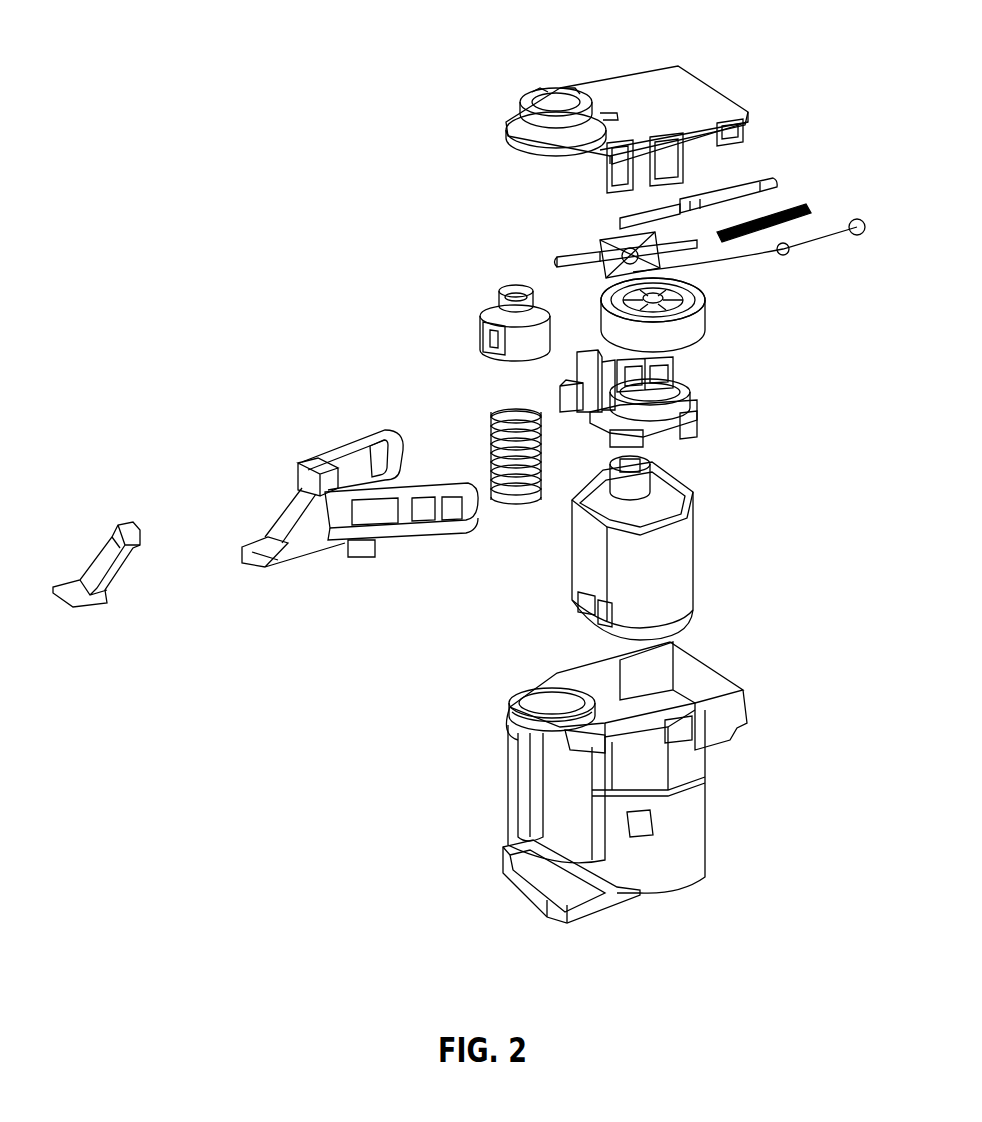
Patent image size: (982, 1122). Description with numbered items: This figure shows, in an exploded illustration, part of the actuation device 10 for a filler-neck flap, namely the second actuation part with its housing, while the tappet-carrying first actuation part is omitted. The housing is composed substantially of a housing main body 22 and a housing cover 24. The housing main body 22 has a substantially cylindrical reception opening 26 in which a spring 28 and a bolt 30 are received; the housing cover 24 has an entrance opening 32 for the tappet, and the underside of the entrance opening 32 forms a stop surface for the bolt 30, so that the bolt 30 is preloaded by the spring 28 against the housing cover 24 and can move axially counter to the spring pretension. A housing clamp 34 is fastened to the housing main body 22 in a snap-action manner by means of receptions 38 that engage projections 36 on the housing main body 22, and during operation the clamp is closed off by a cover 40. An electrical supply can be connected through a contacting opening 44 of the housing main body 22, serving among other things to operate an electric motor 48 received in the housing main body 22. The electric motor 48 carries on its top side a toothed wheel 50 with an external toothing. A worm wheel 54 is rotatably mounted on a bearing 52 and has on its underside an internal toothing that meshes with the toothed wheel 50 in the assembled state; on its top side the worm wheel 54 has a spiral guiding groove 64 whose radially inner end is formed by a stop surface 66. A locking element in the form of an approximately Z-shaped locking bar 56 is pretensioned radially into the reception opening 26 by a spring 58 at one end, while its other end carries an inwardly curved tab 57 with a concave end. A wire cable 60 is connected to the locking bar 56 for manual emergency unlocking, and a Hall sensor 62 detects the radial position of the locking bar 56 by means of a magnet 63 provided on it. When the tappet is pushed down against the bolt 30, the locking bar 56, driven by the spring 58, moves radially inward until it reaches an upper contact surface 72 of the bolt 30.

The actuation device 10 is at (325, 318).
The housing main body 22 is at (705, 823).
The housing cover 24 is at (645, 72).
The reception opening 26 is at (543, 702).
The spring 28 is at (518, 503).
The bolt 30 is at (492, 313).
The entrance opening 32 is at (565, 86).
The housing clamp 34 is at (347, 535).
The projections 36 is at (640, 828).
The receptions 38 is at (443, 513).
The cover 40 is at (103, 557).
The contacting opening 44 is at (510, 870).
The electric motor 48 is at (677, 567).
The toothed wheel 50 is at (647, 467).
The bearing 52 is at (697, 417).
The worm wheel 54 is at (703, 323).
The locking bar 56 is at (572, 252).
The inwardly curved tab 57 is at (570, 268).
The spring 58 is at (786, 212).
The wire cable 60 is at (823, 240).
The Hall sensor 62 is at (620, 213).
The magnet 63 is at (602, 242).
The guiding groove 64 is at (703, 297).
The stop surface 66 is at (618, 300).
The upper contact surface 72 is at (508, 288).